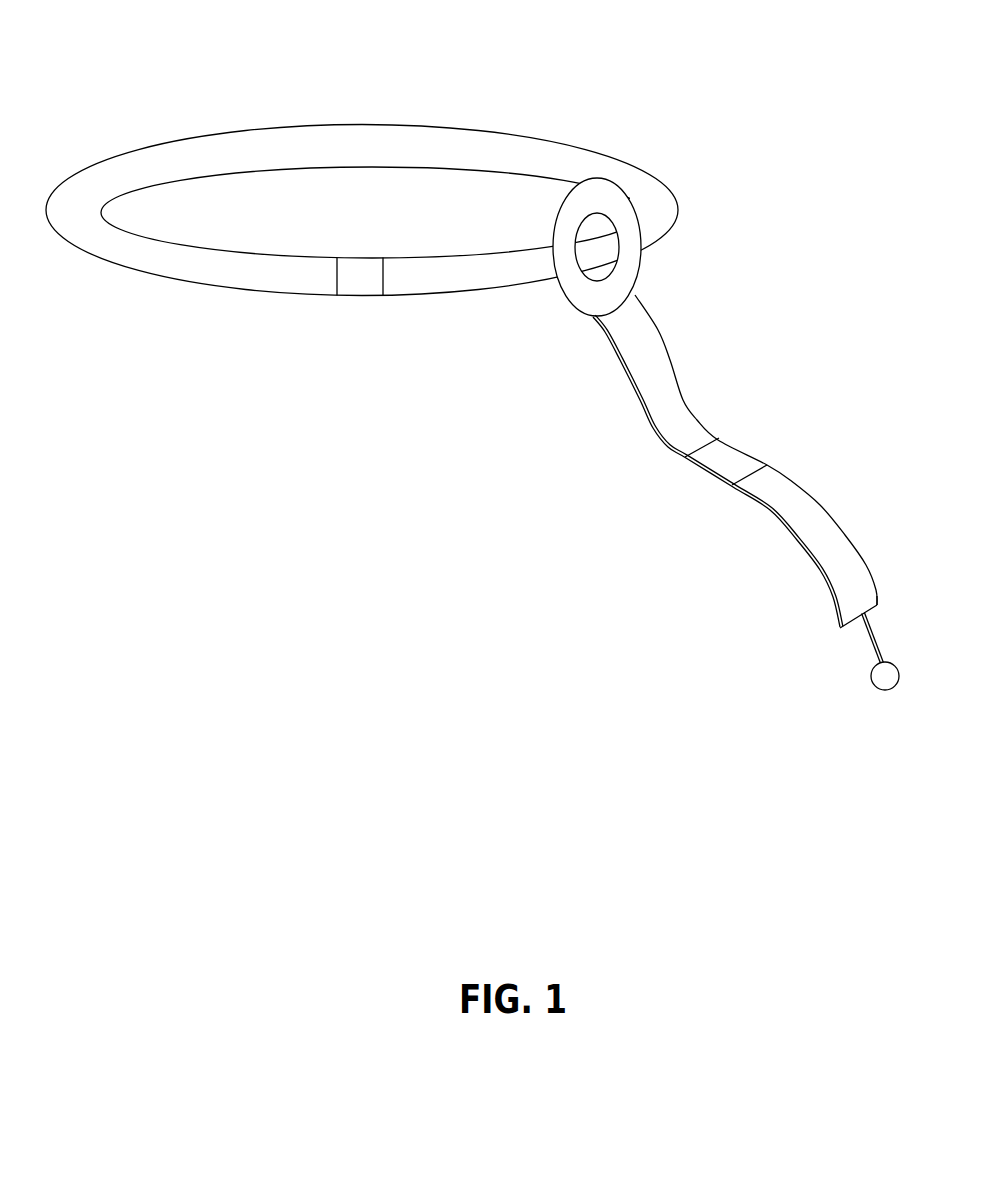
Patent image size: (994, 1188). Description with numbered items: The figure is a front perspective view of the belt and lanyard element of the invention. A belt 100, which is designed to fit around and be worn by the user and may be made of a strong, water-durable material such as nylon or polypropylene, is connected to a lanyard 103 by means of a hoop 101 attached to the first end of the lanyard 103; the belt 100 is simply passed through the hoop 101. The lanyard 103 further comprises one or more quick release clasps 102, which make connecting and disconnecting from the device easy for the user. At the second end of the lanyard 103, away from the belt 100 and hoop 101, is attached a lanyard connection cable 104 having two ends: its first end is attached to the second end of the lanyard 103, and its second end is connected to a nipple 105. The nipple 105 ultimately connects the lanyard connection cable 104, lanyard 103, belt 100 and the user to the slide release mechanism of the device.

The belt 100 is at (258, 130).
The hoop 101 is at (637, 215).
The quick release clasp 102 is at (357, 295).
The lanyard 103 is at (797, 538).
The lanyard connection cable 104 is at (870, 653).
The nipple 105 is at (885, 690).